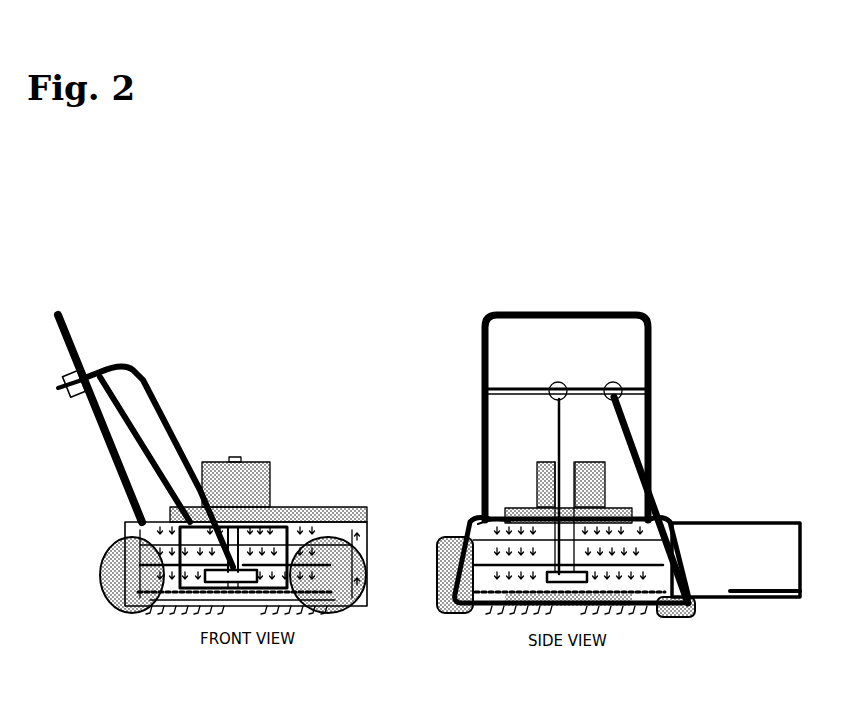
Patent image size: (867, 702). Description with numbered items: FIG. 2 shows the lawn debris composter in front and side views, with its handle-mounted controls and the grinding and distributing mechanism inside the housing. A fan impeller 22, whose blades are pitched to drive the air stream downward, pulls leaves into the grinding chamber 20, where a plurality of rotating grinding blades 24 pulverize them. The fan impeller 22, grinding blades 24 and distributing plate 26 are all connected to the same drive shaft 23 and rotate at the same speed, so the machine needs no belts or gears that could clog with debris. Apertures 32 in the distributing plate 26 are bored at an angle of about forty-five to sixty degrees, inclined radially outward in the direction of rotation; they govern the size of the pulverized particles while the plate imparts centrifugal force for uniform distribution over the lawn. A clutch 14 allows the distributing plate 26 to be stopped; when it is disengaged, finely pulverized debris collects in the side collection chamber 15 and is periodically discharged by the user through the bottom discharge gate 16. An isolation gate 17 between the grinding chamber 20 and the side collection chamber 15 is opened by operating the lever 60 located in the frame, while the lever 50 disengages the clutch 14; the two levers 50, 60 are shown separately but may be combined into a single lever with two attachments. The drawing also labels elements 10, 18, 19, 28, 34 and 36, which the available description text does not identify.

The apparatus 10 is at (500, 285).
The clutch 14 is at (500, 600).
The side collection chamber 15 is at (312, 530).
The bottom discharge gate 16 is at (239, 601).
The isolation gate 17 is at (685, 560).
The drive rod 18 is at (148, 452).
The handle 19 is at (143, 380).
The grinding chamber 20 is at (300, 486).
The fan impeller 22 is at (480, 516).
The drive shaft 23 is at (243, 460).
The grinding blades 24 is at (437, 540).
The distributing plate 26 is at (340, 560).
The spindle plate 28 is at (340, 575).
The apertures 32 is at (300, 507).
The handle bar 34 is at (77, 353).
The brush 36 is at (340, 593).
The lever 50 is at (61, 392).
The lever 60 is at (614, 384).